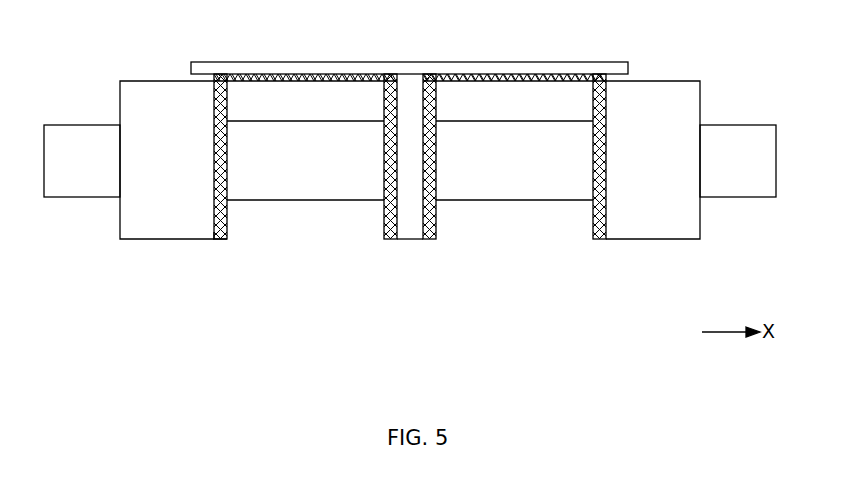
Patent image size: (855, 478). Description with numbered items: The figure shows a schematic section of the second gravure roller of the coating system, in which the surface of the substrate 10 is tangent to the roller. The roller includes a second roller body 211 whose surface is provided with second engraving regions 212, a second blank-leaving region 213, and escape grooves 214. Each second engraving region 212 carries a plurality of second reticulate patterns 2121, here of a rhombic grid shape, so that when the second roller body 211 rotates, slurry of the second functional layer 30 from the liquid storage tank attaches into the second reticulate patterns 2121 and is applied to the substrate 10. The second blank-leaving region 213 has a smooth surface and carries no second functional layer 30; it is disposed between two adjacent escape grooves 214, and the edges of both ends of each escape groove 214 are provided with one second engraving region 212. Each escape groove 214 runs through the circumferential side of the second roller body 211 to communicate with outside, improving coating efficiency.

The substrate 10 is at (302, 62).
The second functional layer 30 is at (260, 75).
The second roller body 211 is at (364, 191).
The second engraving region 212 is at (226, 242).
The second reticulate pattern 2121 is at (213, 232).
The second blank-leaving region 213 is at (406, 177).
The escape groove 214 is at (292, 210).